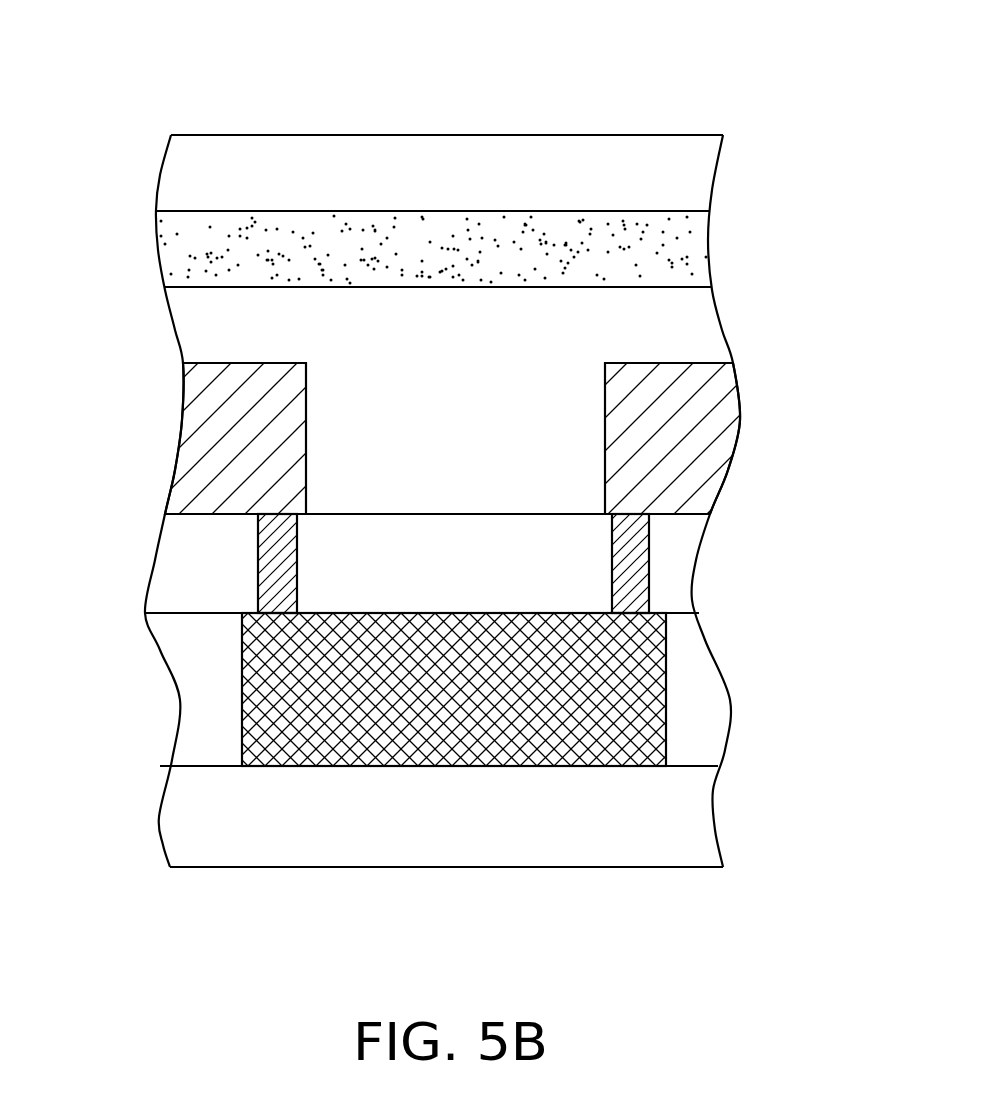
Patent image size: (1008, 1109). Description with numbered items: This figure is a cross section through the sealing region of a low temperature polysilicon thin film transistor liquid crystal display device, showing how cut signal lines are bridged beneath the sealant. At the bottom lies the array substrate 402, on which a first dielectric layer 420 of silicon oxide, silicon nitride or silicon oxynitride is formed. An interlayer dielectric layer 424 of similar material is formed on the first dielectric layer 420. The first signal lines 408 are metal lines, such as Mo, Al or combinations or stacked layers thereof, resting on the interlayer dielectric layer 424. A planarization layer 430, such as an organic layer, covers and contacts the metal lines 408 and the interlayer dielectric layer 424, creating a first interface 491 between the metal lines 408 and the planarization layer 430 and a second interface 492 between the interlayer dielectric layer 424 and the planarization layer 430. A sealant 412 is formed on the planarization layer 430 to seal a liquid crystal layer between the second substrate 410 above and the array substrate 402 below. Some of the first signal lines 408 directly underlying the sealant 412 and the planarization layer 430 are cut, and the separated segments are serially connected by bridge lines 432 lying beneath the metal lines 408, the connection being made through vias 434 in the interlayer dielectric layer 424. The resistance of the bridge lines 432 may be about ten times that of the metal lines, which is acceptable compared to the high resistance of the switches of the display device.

The array substrate 402 is at (683, 810).
The first signal lines 408 is at (680, 457).
The second substrate 410 is at (675, 173).
The sealant 412 is at (675, 257).
The first dielectric layer 420 is at (688, 712).
The interlayer dielectric layer 424 is at (673, 568).
The planarization layer 430 is at (523, 427).
The bridge lines 432 is at (633, 663).
The vias 434 is at (623, 535).
The first interface 491 is at (250, 363).
The second interface 492 is at (437, 514).